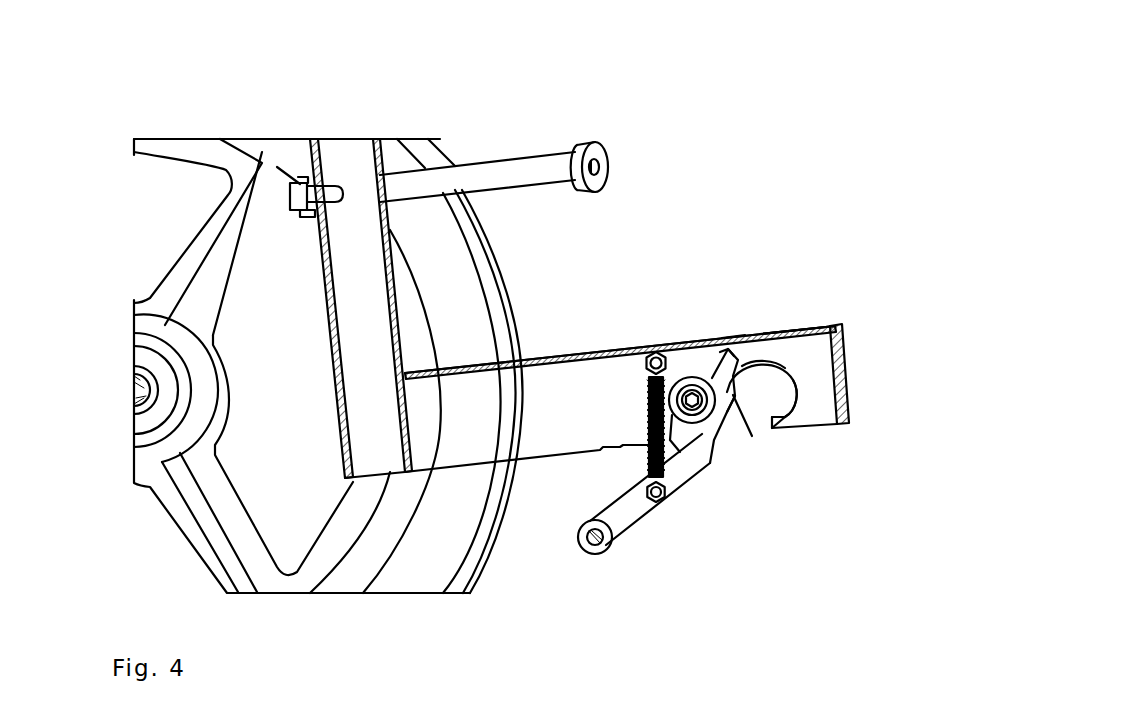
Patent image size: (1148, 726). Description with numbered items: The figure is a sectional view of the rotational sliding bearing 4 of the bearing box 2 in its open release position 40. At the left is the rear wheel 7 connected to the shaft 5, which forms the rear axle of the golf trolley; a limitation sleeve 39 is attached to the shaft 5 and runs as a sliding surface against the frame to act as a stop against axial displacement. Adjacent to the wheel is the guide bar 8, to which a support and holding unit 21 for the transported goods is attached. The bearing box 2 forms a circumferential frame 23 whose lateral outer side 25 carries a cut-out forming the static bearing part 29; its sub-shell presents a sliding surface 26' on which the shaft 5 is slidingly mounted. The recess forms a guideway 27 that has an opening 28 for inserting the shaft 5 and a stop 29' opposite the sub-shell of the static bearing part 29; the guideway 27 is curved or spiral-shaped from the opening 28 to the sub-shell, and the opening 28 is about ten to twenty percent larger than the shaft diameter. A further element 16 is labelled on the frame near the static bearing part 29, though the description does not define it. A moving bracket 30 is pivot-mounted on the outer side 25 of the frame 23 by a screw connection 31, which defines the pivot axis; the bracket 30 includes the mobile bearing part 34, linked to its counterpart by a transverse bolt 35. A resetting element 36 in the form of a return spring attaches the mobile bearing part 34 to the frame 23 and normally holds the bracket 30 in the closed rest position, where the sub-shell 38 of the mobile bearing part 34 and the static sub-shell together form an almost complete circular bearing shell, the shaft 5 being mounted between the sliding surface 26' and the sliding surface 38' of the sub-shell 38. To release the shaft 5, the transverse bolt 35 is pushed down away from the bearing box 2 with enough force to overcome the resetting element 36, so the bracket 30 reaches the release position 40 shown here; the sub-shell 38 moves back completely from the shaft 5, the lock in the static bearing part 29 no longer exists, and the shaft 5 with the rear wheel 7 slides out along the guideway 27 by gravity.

The bearing box 2 is at (838, 322).
The rotational sliding bearing 4 is at (789, 419).
The shaft 5 is at (150, 366).
The rear wheel 7 is at (447, 263).
The guide bar 8 is at (330, 303).
The hook contact surface 16 is at (799, 382).
The support and holding unit 21 is at (529, 175).
The circumferential frame 23 is at (843, 398).
The lateral outer side 25 is at (577, 437).
The sliding surface 26' is at (782, 396).
The guideway 27 is at (758, 361).
The opening 28 is at (752, 442).
The static bearing part 29 is at (806, 307).
The stop 29' is at (786, 471).
The bracket 30 is at (634, 529).
The screw connection 31 is at (693, 404).
The mobile bearing part 34 is at (712, 365).
The transverse bolt 35 is at (598, 541).
The resetting element 36 is at (645, 398).
The sub-shell 38 is at (715, 295).
The sliding surface 38' is at (749, 305).
The limitation sleeve 39 is at (146, 356).
The release position 40 is at (645, 328).